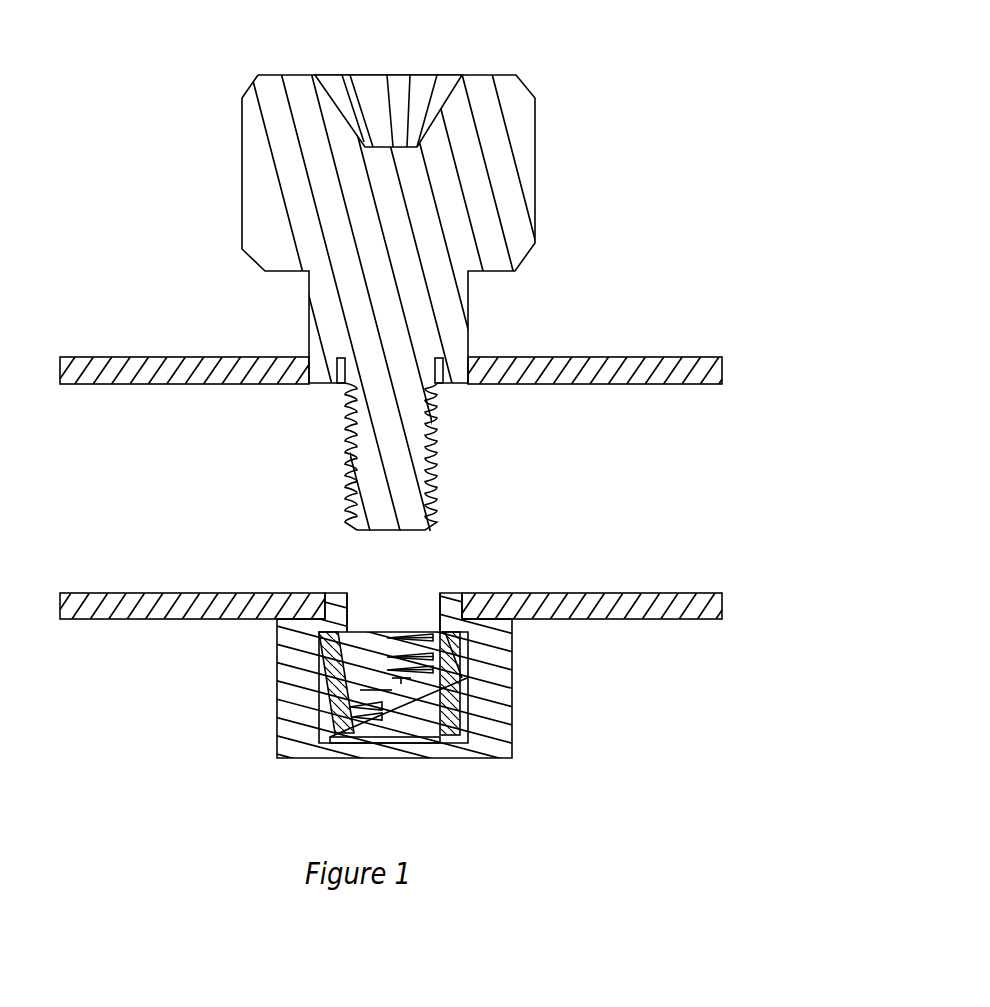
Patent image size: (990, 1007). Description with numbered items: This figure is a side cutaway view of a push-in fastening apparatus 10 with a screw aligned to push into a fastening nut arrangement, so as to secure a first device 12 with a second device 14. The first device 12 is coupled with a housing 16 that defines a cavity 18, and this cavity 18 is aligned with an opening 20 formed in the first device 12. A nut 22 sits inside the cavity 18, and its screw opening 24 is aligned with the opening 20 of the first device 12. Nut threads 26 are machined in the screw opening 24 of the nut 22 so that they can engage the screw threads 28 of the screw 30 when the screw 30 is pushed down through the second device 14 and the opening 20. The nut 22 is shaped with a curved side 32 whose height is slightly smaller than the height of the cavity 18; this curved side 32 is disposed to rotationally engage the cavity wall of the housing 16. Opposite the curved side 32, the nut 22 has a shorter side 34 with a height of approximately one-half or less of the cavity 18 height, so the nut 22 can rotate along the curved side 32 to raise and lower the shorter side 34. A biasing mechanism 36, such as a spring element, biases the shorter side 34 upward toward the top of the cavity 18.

The push-in fastening apparatus 10 is at (833, 84).
The first device 12 is at (630, 591).
The second device 14 is at (640, 352).
The housing 16 is at (516, 687).
The cavity 18 is at (428, 742).
The opening 20 is at (425, 591).
The nut 22 is at (328, 695).
The screw opening 24 is at (370, 658).
The nut threads 26 is at (402, 688).
The screw threads 28 is at (345, 470).
The screw 30 is at (503, 73).
The curved side 32 is at (310, 722).
The shorter side 34 is at (464, 646).
The biasing mechanism 36 is at (463, 730).